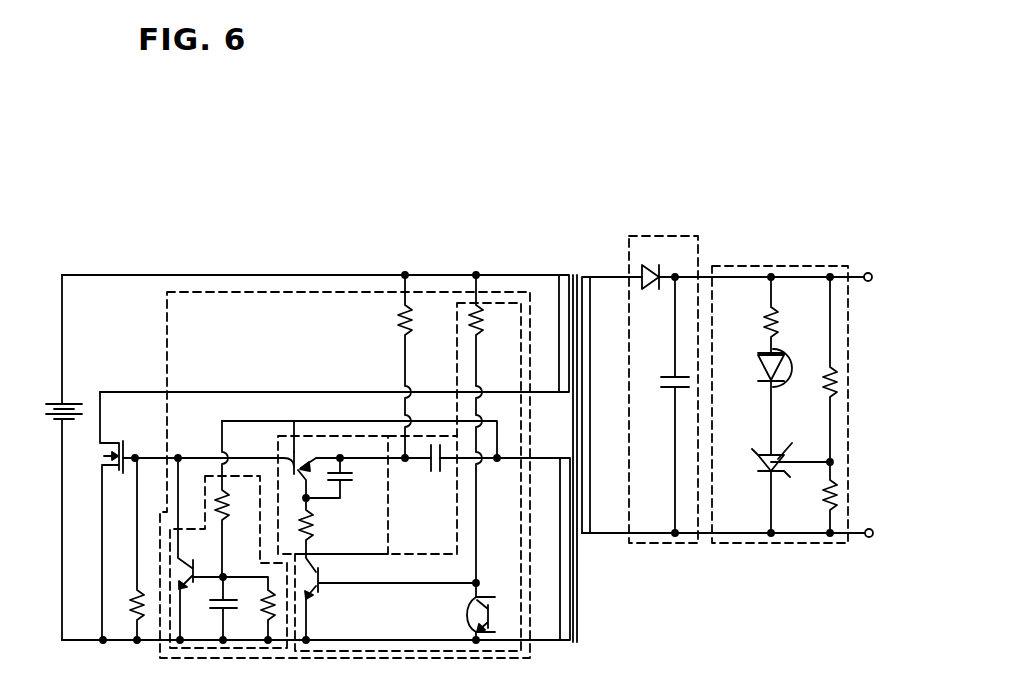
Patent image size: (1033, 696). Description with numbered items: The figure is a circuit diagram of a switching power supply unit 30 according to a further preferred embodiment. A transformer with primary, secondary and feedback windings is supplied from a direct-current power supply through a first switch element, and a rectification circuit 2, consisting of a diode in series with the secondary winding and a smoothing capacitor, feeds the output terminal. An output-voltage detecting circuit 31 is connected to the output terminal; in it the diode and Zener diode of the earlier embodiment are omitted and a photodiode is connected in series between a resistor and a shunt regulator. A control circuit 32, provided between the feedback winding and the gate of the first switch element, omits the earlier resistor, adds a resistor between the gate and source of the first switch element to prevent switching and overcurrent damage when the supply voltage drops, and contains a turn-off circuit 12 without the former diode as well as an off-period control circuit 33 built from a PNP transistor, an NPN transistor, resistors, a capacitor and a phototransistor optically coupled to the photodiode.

The switching power supply unit 30 is at (308, 221).
The control circuit 32 is at (235, 292).
The turn-off circuit 12 is at (245, 476).
The off-period control circuit 33 is at (294, 422).
The rectification circuit 2 is at (662, 236).
The output-voltage detecting circuit 31 is at (762, 266).